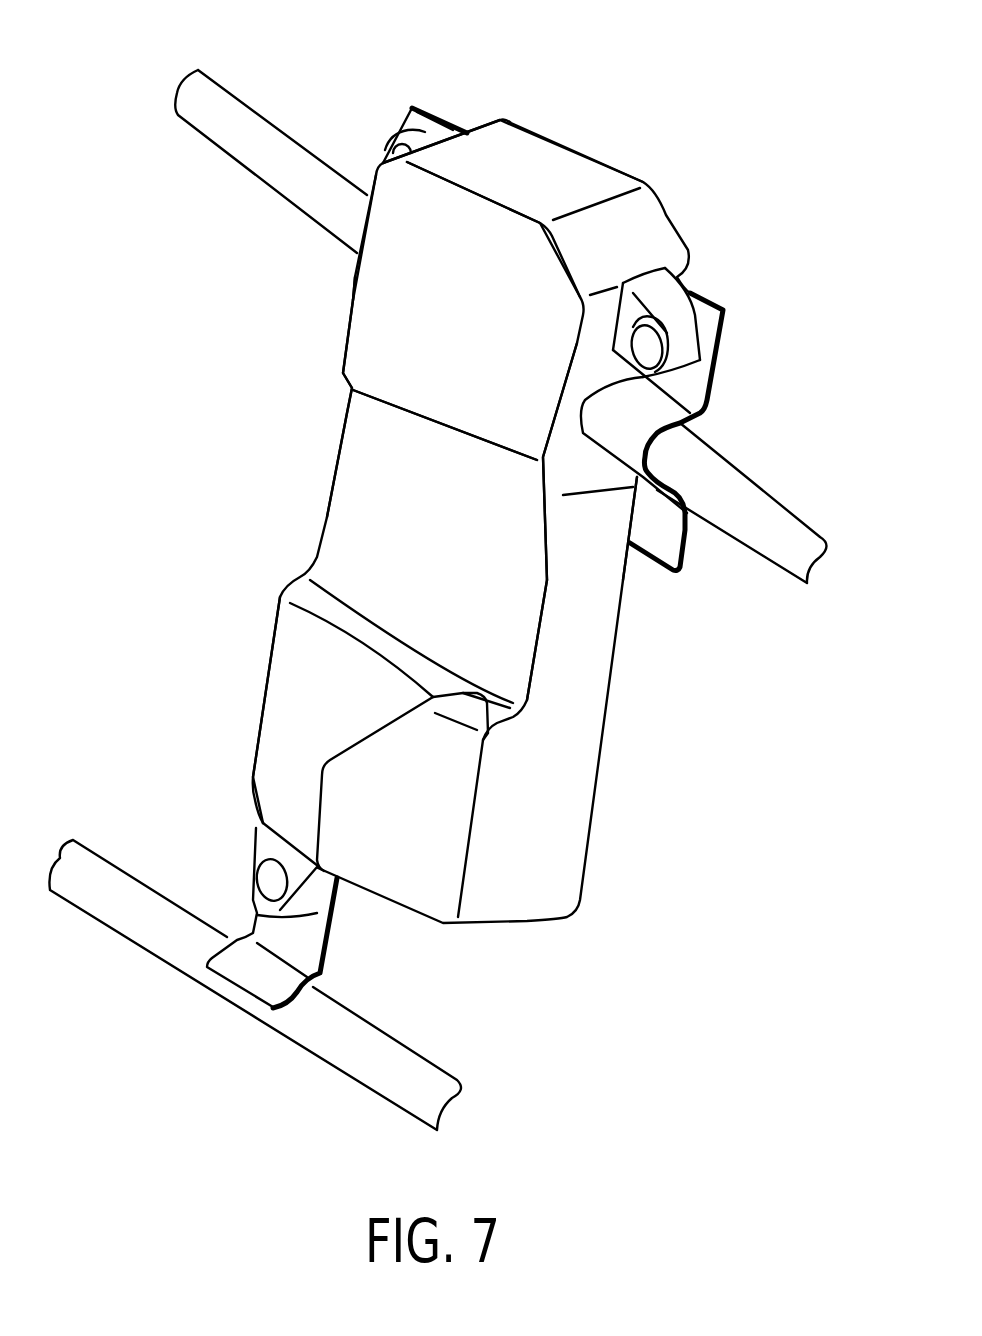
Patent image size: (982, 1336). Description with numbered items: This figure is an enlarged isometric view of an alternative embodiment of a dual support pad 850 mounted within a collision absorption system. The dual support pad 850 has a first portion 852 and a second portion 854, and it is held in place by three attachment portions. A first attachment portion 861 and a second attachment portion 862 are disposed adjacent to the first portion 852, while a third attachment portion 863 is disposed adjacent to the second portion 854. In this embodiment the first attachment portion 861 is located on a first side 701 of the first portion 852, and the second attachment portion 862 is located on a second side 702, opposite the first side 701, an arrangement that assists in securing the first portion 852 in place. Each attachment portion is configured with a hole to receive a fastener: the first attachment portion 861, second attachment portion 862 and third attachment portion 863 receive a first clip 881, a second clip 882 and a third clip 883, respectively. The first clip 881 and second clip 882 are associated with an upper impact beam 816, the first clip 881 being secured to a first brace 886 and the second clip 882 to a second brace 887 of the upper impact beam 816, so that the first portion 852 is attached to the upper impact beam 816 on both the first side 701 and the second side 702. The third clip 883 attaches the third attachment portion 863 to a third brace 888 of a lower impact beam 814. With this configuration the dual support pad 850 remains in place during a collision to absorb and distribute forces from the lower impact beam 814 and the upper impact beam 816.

The dual support pad 850 is at (623, 110).
The first portion 852 is at (440, 319).
The second portion 854 is at (333, 724).
The first side 701 is at (572, 472).
The second side 702 is at (343, 373).
The first attachment portion 861 is at (692, 322).
The second attachment portion 862 is at (420, 133).
The third attachment portion 863 is at (313, 897).
The first clip 881 is at (640, 338).
The second clip 882 is at (387, 152).
The third clip 883 is at (270, 880).
The first brace 886 is at (720, 323).
The second brace 887 is at (423, 112).
The third brace 888 is at (313, 948).
The lower impact beam 814 is at (325, 1040).
The upper impact beam 816 is at (790, 530).